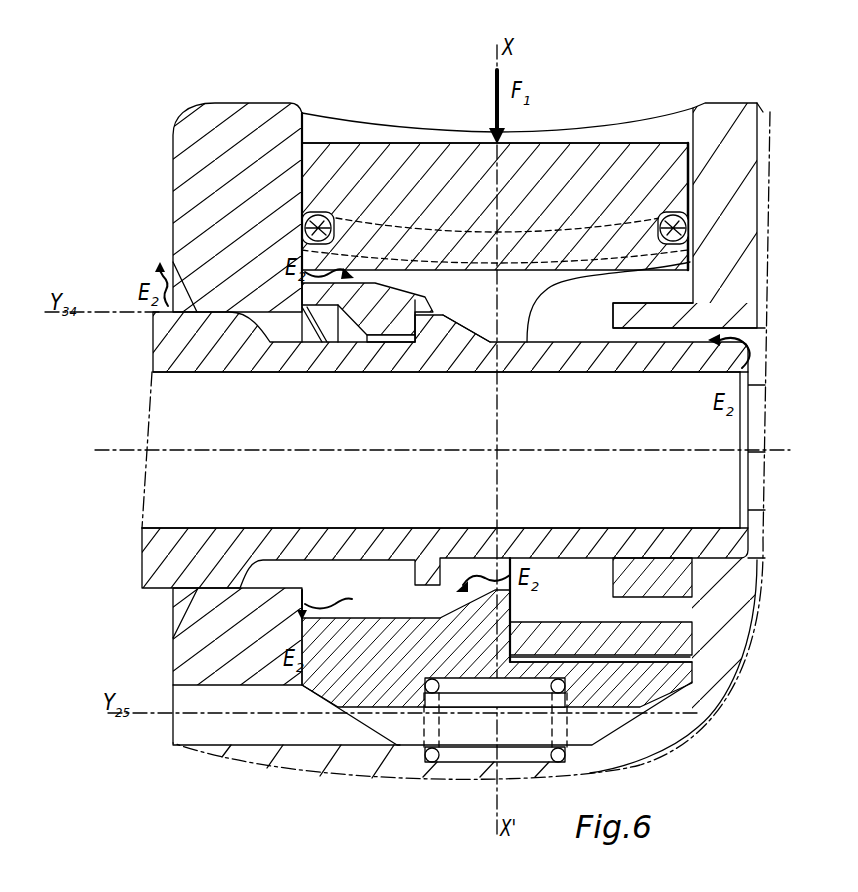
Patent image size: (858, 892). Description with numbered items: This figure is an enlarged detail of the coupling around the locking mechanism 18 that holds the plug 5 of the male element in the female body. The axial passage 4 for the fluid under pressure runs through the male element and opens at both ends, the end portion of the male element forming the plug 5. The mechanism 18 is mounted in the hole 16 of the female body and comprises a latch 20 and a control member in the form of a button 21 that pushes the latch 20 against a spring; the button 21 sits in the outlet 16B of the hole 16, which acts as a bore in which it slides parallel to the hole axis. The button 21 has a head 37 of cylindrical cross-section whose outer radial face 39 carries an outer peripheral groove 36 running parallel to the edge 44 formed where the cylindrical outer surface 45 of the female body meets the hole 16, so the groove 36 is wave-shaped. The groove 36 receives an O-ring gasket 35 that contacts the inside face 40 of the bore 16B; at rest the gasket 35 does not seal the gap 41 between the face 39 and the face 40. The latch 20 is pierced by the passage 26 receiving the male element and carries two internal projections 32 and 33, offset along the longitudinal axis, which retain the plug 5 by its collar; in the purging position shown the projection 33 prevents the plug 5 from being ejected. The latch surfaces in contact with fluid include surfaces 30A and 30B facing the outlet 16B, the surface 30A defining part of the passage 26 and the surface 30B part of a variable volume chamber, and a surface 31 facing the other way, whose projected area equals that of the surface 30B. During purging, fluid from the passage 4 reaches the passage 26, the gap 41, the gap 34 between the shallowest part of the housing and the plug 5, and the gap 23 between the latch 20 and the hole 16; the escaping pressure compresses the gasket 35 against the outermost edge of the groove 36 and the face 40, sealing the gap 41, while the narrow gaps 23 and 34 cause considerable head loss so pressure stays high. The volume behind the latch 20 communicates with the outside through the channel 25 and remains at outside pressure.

The axial passage 4 is at (441, 450).
The plug 5 is at (708, 550).
The hole 16 is at (512, 288).
The outlet of the hole 16B is at (676, 125).
The locking mechanism 18 is at (593, 126).
The latch 20 is at (390, 640).
The button 21 is at (636, 167).
The gap 23 is at (314, 698).
The channel 25 is at (200, 728).
The passage 26 is at (192, 593).
The surface 30A is at (622, 652).
The surface 30B is at (350, 278).
The surface 31 is at (397, 344).
The projection 32 is at (506, 590).
The projection 33 is at (382, 325).
The gap 34 is at (240, 316).
The O-ring gasket 35 is at (347, 180).
The outer peripheral groove 36 is at (693, 233).
The head 37 is at (470, 170).
The outer radial face 39 is at (296, 161).
The inside face of the bore 40 is at (762, 288).
The gap 41 is at (303, 136).
The edge 44 is at (422, 124).
The cylindrical outer surface 45 is at (286, 98).